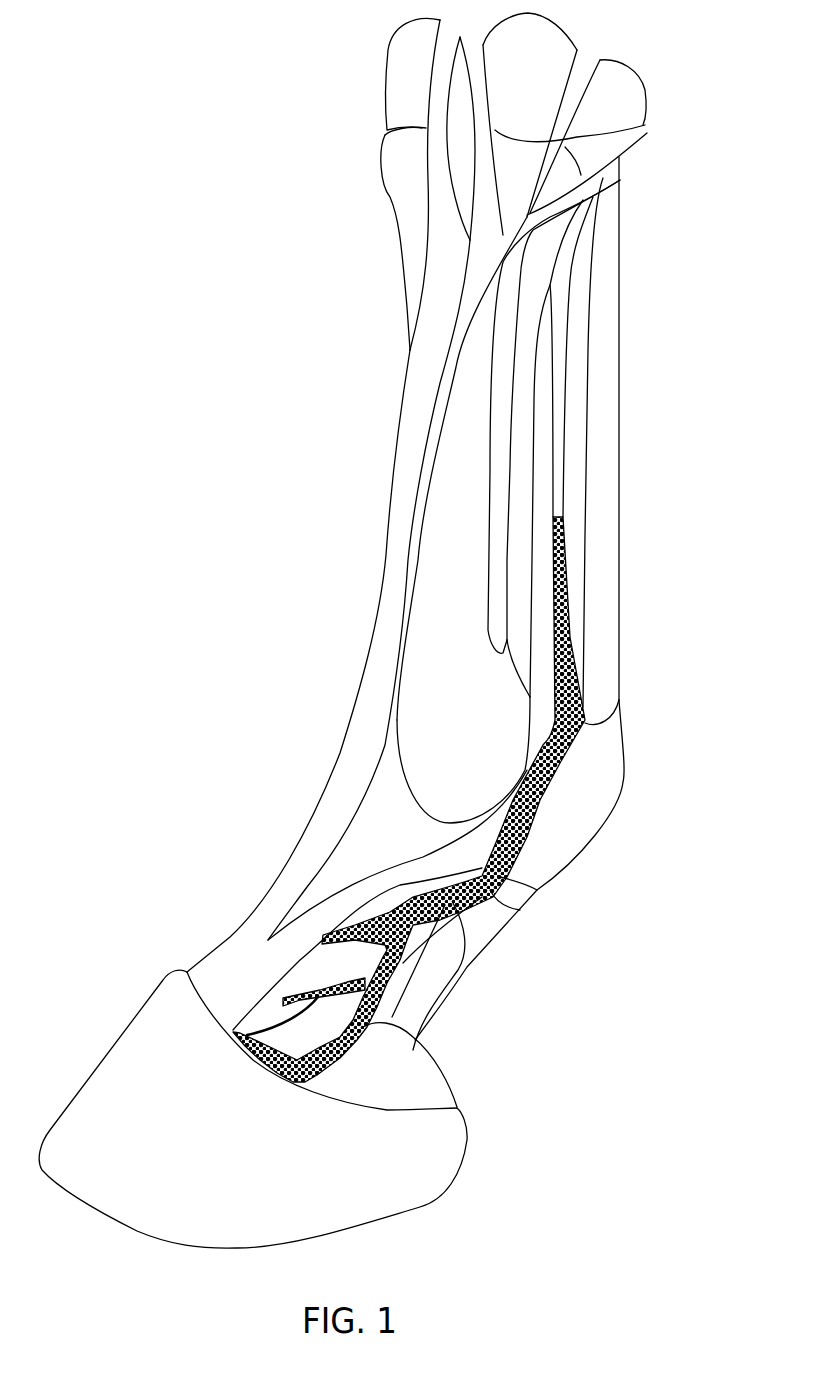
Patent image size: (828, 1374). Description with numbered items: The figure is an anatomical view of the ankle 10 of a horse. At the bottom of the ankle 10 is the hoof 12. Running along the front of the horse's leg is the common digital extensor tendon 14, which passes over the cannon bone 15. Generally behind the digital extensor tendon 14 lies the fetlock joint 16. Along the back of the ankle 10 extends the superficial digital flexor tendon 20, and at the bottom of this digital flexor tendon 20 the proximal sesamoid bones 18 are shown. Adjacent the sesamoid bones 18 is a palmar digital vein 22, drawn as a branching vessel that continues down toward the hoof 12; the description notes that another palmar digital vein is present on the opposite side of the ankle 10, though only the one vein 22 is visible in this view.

The ankle 10 is at (160, 483).
The hoof 12 is at (123, 1055).
The common digital extensor tendon 14 is at (363, 687).
The cannon bone 15 is at (442, 515).
The fetlock joint 16 is at (410, 758).
The proximal sesamoid bones 18 is at (607, 794).
The superficial digital flexor tendon 20 is at (607, 478).
The palmar digital vein 22 is at (530, 842).